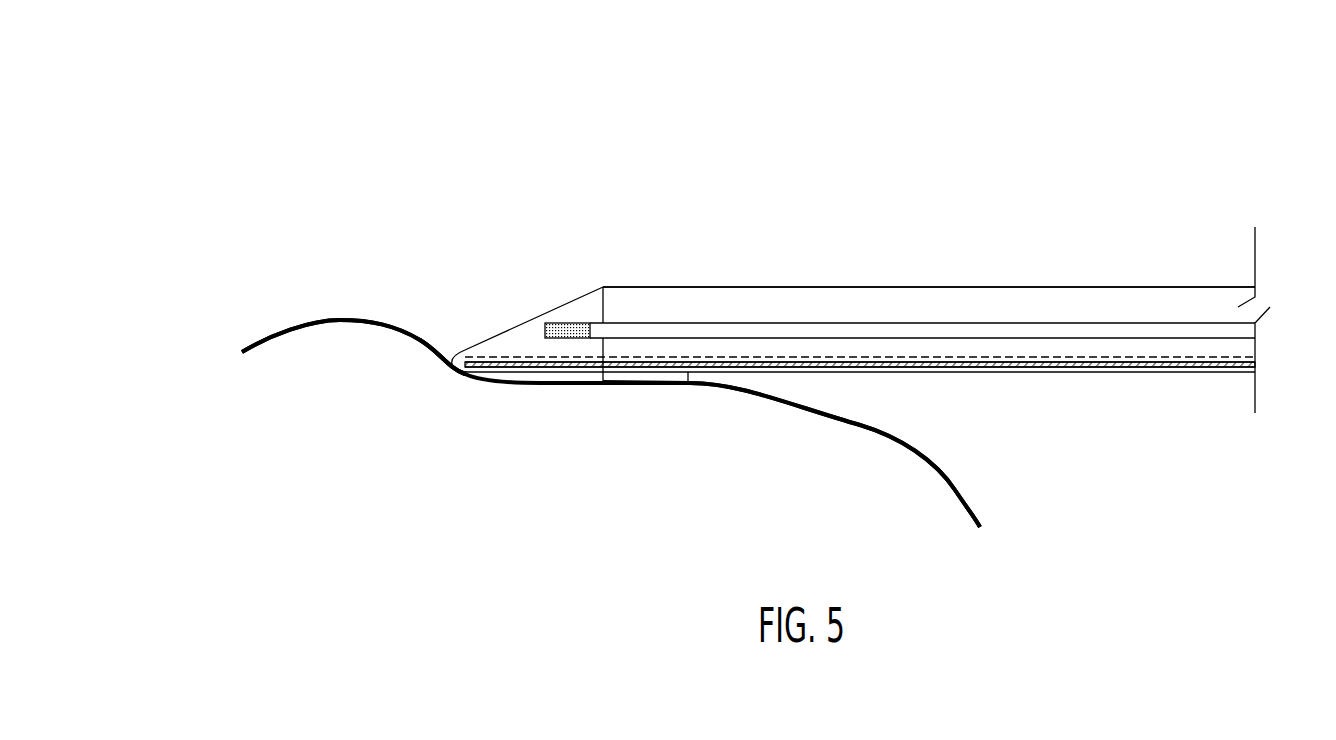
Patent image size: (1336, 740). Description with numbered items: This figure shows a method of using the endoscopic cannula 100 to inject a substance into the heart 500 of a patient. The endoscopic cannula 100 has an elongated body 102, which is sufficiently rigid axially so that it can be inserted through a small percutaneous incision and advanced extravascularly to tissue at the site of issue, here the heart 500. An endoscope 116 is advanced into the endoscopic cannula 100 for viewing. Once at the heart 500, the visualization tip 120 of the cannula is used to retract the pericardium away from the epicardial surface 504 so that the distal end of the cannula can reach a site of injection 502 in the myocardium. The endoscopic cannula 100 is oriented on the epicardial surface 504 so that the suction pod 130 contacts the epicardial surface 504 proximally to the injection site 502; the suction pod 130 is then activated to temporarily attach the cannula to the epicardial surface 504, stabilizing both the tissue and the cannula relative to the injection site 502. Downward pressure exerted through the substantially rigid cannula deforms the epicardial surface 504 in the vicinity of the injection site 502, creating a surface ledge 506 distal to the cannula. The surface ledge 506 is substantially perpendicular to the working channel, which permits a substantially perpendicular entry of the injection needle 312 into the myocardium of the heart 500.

The endoscopic cannula 100 is at (1214, 188).
The elongated body 102 is at (780, 286).
The endoscope 116 is at (963, 323).
The visualization tip 120 is at (574, 299).
The suction pod 130 is at (633, 394).
The injection needle 312 is at (455, 372).
The heart 500 is at (256, 302).
The injection site 502 is at (414, 373).
The epicardial surface 504 is at (862, 424).
The surface ledge 506 is at (412, 320).